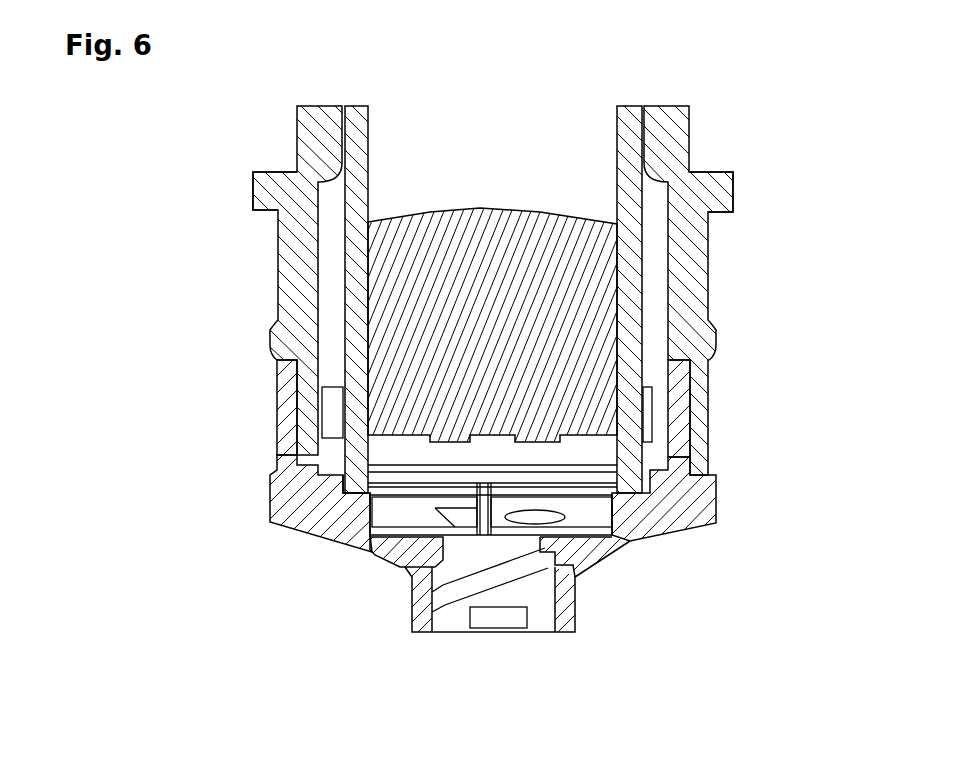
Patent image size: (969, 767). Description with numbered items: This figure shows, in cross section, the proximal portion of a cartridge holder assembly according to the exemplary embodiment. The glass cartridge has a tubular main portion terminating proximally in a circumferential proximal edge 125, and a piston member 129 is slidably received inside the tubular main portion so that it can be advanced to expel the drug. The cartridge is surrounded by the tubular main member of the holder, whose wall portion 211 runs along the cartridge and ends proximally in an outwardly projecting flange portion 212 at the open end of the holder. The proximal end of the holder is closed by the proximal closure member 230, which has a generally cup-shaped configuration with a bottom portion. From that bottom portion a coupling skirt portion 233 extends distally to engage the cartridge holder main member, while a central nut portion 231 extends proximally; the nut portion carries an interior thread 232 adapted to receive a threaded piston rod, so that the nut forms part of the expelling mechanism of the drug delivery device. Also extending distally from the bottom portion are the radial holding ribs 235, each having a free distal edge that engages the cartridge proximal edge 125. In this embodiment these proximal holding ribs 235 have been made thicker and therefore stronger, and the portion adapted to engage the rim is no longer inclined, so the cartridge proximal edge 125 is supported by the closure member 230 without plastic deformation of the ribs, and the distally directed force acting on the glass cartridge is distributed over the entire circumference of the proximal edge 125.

The circumferential proximal edge 125 is at (362, 492).
The piston member 129 is at (388, 300).
The housing wall 211 is at (697, 265).
The flange 212 is at (730, 195).
The proximal closure member 230 is at (672, 500).
The central nut portion 231 is at (568, 607).
The interior thread 232 is at (513, 587).
The coupling skirt portion 233 is at (698, 418).
The radial holding ribs 235 is at (352, 500).